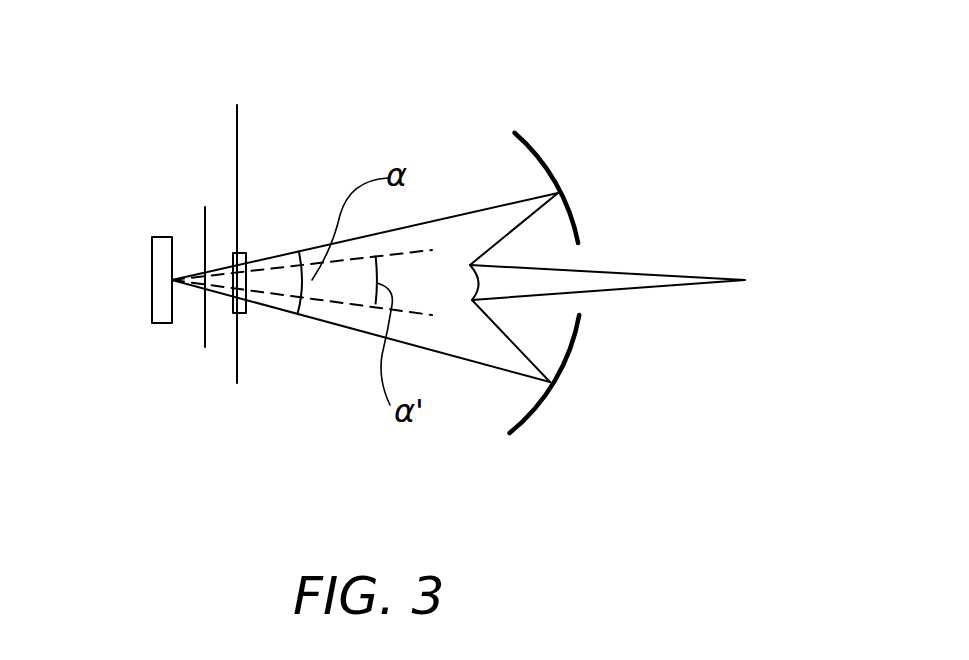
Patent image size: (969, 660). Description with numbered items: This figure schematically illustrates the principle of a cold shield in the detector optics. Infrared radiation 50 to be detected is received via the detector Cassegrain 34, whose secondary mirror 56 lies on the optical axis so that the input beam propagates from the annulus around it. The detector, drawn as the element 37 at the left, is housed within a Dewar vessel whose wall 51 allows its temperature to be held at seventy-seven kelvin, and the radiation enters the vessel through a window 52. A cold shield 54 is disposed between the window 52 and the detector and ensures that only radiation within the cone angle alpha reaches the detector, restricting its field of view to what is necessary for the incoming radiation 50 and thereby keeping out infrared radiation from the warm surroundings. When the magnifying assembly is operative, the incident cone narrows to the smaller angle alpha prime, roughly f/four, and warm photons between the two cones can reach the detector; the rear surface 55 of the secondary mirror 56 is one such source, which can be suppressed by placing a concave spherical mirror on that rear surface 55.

The detector Cassegrain 34 is at (575, 151).
The light source 37 is at (152, 311).
The IR radiation 50 is at (328, 322).
The Dewar vessel wall 51 is at (237, 153).
The window 52 is at (246, 313).
The cold shield 54 is at (205, 347).
The rear surface 55 is at (472, 300).
The secondary mirror 56 is at (470, 264).